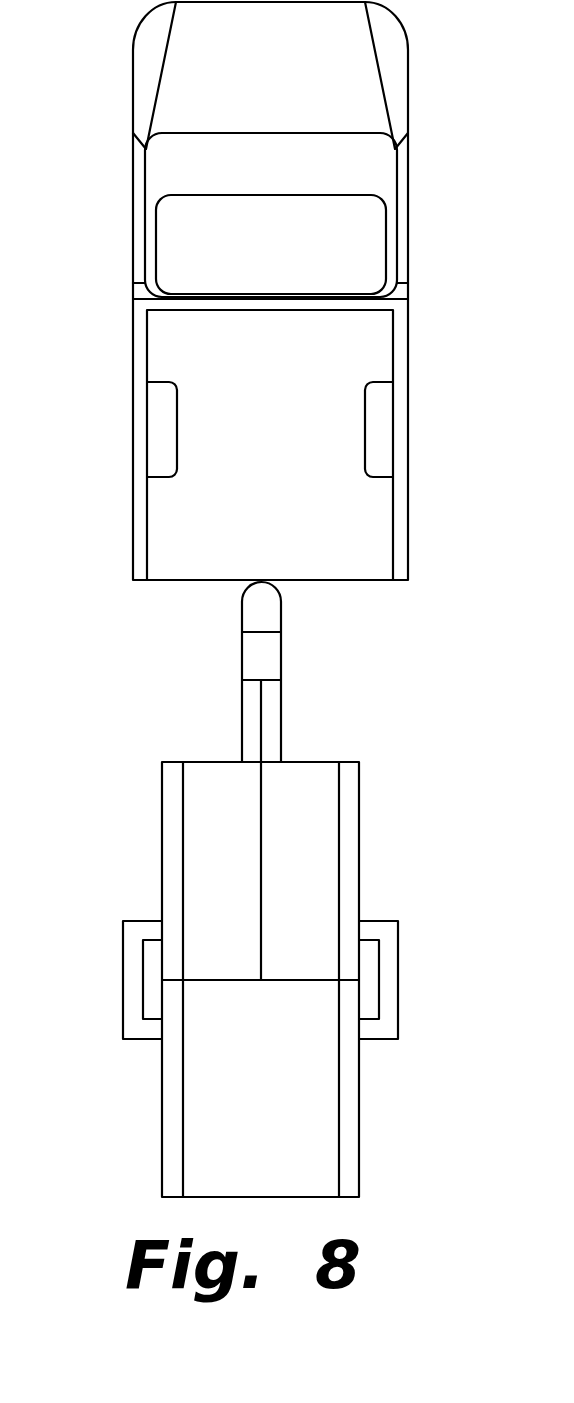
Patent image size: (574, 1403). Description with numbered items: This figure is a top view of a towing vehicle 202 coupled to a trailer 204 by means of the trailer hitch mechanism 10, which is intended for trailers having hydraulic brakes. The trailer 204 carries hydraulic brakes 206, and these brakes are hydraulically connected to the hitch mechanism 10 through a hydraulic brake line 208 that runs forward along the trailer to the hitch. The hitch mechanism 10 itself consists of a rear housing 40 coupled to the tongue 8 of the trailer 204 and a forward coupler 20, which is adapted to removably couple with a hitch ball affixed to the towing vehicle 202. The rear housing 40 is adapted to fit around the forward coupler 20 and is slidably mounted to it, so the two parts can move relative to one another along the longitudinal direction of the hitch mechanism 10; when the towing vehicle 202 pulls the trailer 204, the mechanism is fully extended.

The tongue 8 is at (282, 733).
The trailer hitch mechanism 10 is at (278, 781).
The forward coupler 20 is at (277, 623).
The rear housing 40 is at (277, 667).
The towing vehicle 202 is at (290, 492).
The trailer 204 is at (274, 1128).
The hydraulic brakes 206 is at (156, 980).
The hydraulic brake line 208 is at (257, 743).